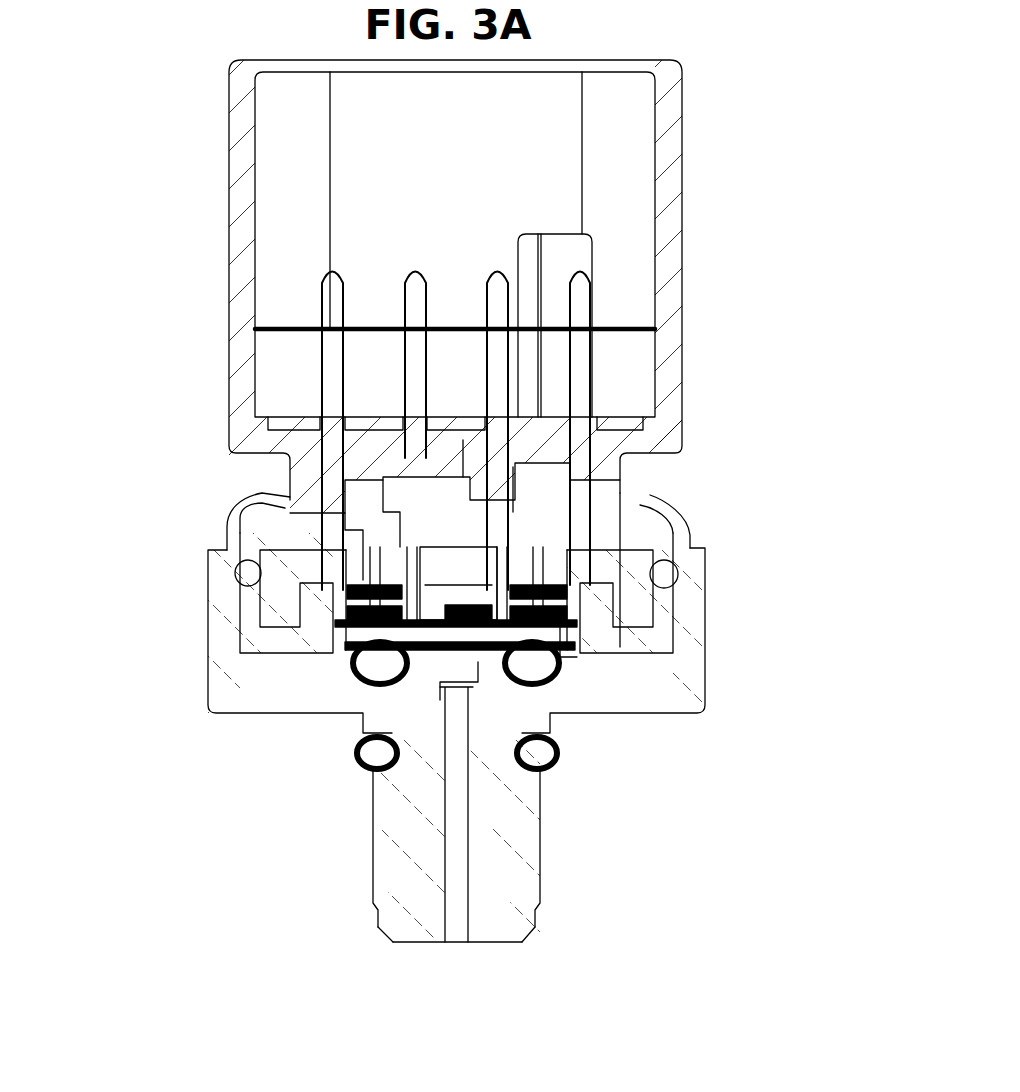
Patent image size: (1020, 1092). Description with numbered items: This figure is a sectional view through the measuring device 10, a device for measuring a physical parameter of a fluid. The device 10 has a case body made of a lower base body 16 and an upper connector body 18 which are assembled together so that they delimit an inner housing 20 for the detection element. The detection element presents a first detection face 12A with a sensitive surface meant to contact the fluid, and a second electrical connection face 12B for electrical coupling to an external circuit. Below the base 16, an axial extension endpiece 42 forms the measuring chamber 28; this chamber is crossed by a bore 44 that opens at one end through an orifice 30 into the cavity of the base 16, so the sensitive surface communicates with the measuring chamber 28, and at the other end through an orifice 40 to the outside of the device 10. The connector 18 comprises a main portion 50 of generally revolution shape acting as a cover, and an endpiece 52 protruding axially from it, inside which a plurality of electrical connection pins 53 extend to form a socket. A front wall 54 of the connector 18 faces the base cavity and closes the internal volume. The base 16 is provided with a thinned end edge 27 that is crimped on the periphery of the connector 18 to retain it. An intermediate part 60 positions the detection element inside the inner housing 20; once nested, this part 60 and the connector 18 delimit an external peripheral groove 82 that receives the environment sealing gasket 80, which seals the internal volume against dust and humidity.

The measuring device 10 is at (294, 910).
The first detection face 12A is at (565, 657).
The second electrical connection face 12B is at (338, 655).
The base body 16 is at (656, 697).
The connector body 18 is at (238, 224).
The inner housing 20 is at (312, 562).
The end edge 27 is at (640, 500).
The measuring chamber 28 is at (478, 662).
The orifice 30 is at (358, 741).
The orifice 40 is at (452, 942).
The axial extension endpiece 42 is at (413, 902).
The bore 44 is at (450, 789).
The main portion 50 is at (272, 533).
The endpiece 52 is at (683, 147).
The electrical connection pins 53 is at (332, 377).
The front wall 54 is at (668, 530).
The intermediate part 60 is at (695, 660).
The environment sealing gasket 80 is at (242, 556).
The external peripheral groove 82 is at (675, 622).